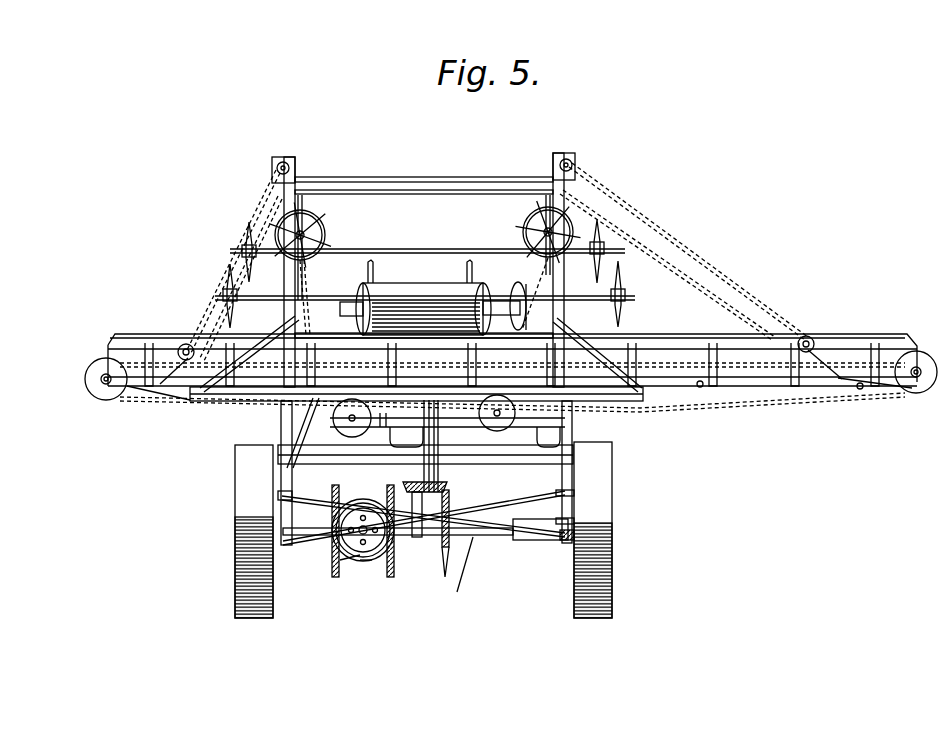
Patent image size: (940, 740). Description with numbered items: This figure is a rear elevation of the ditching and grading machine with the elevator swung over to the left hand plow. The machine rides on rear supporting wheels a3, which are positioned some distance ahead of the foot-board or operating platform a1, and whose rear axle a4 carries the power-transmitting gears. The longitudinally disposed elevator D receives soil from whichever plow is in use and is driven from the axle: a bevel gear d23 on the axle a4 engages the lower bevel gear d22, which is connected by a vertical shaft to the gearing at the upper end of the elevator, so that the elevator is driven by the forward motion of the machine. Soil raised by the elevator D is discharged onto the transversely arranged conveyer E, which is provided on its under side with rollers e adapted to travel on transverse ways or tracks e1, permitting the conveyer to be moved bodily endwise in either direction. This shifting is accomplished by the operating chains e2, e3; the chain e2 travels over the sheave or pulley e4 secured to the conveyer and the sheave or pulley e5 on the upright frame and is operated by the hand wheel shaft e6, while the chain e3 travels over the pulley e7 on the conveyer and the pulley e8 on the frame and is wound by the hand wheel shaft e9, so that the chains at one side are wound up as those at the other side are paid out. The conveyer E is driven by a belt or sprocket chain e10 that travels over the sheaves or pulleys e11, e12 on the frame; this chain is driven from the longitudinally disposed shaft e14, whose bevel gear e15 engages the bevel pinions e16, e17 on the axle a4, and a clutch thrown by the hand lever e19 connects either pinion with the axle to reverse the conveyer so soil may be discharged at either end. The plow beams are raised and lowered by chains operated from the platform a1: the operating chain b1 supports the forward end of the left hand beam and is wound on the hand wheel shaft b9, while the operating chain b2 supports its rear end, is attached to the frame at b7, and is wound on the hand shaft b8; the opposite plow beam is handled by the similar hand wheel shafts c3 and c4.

The pulley e8 is at (285, 163).
The sheave or pulley e5 is at (572, 162).
The operating chain e3 is at (253, 204).
The operating chain e2 is at (735, 284).
The pulley e7 is at (166, 341).
The sheave or pulley e4 is at (808, 341).
The hand wheel shaft e9 is at (320, 229).
The hand wheel shaft e6 is at (540, 230).
The hand shaft b8 is at (243, 250).
The hand wheel shaft b9 is at (228, 292).
The hand wheel shaft c4 is at (600, 246).
The hand wheel shaft c3 is at (624, 299).
The attachment point b7 is at (307, 272).
The operating chain b1 is at (545, 312).
The elevator D is at (415, 305).
The operating chain b2 is at (535, 268).
The transverse ways or tracks e1 is at (613, 394).
The conveyer E is at (737, 366).
The rollers e is at (700, 387).
The belt or sprocket chain e10 is at (858, 398).
The sheave or pulley e12 is at (333, 418).
The sheave or pulley e11 is at (495, 418).
The foot-board or operating platform a1 is at (280, 458).
The hand lever e19 is at (362, 490).
The longitudinally disposed shaft e14 is at (283, 522).
The rear axle a4 is at (487, 534).
The bevel pinion e16 is at (337, 558).
The bevel pinion e17 is at (381, 570).
The bevel gear e15 is at (357, 560).
The lower bevel gear d22 is at (421, 540).
The bevel gear d23 is at (457, 563).
The rear supporting wheels a3 is at (610, 593).